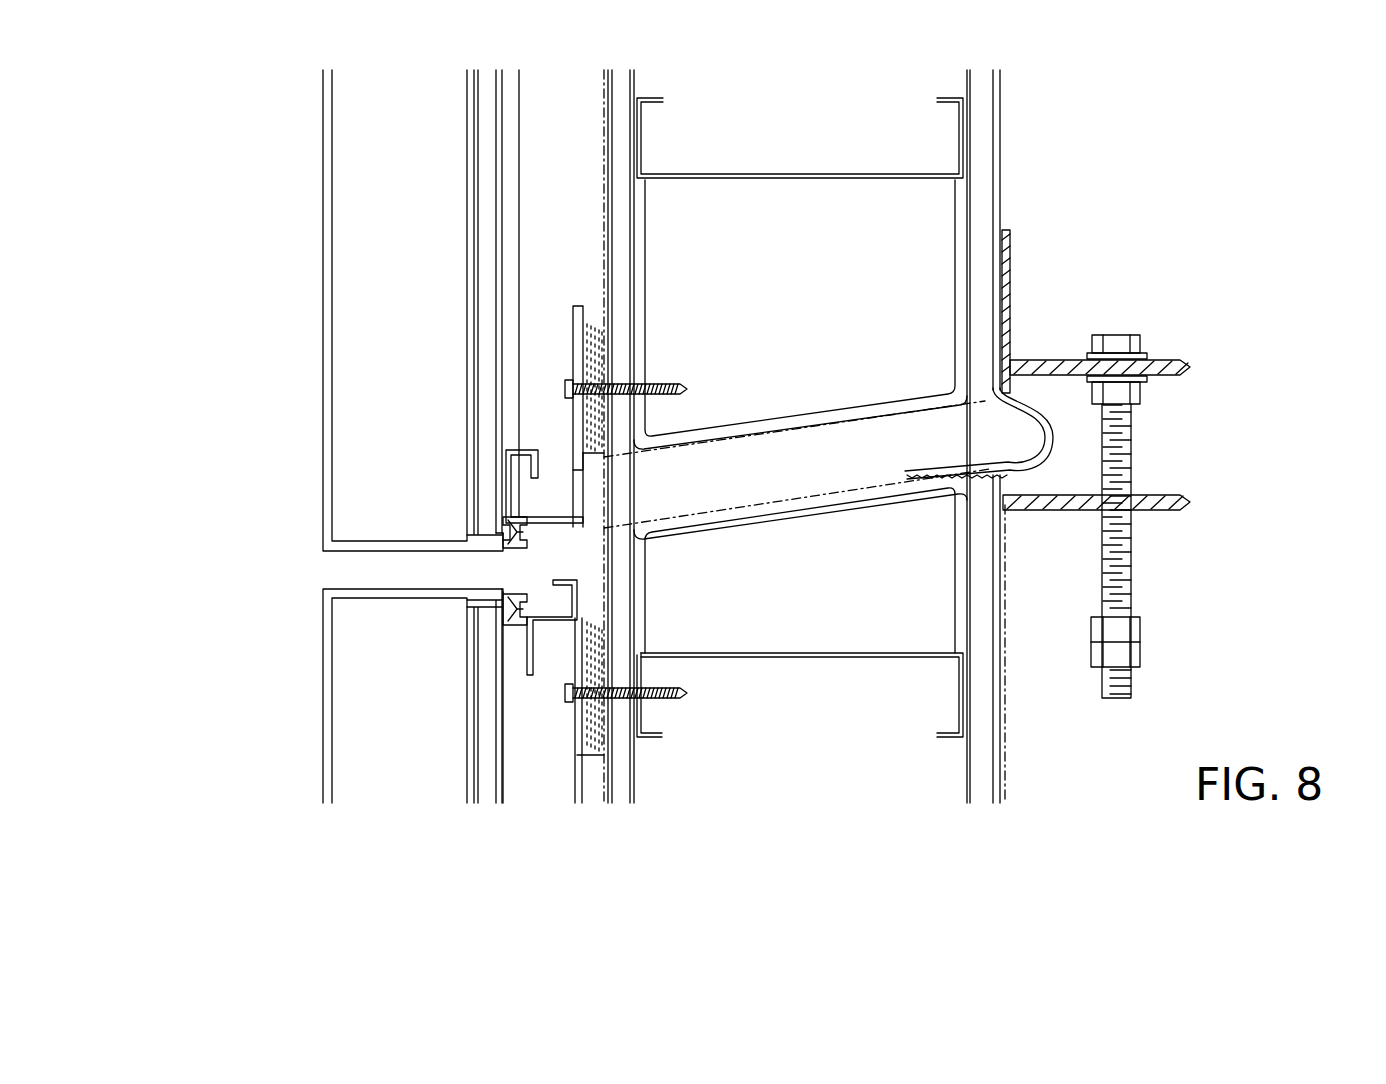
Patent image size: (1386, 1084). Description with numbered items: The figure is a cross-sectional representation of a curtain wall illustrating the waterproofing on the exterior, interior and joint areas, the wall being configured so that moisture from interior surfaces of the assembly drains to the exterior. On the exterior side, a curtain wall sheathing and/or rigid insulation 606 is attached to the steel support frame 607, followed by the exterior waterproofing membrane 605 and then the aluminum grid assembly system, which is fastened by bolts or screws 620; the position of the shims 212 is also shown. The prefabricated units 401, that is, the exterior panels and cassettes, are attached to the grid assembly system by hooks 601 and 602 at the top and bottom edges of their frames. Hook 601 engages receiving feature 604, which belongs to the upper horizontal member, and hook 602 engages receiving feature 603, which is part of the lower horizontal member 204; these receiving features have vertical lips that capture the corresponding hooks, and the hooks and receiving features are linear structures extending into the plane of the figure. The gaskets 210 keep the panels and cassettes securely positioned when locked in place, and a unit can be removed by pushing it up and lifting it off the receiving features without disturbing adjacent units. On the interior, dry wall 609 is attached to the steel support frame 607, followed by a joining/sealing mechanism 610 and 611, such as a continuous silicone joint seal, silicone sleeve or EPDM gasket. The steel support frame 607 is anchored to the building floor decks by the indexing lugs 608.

The units 401 is at (322, 236).
The lower horizontal member 204 is at (580, 477).
The gaskets 210 is at (518, 545).
The shims 212 is at (590, 760).
The hook 601 is at (518, 590).
The hook 602 is at (535, 450).
The receiving feature 603 is at (535, 498).
The receiving feature 604 is at (580, 605).
The exterior waterproofing membrane 605 is at (713, 510).
The curtain wall sheathing and/or rigid insulation 606 is at (628, 778).
The steel support frame 607 is at (798, 190).
The indexing lugs 608 is at (1133, 566).
The dry wall 609 is at (968, 785).
The joining/sealing mechanism 610 is at (1047, 433).
The joining/sealing mechanism 611 is at (1010, 238).
The bolts or screws 620 is at (663, 389).